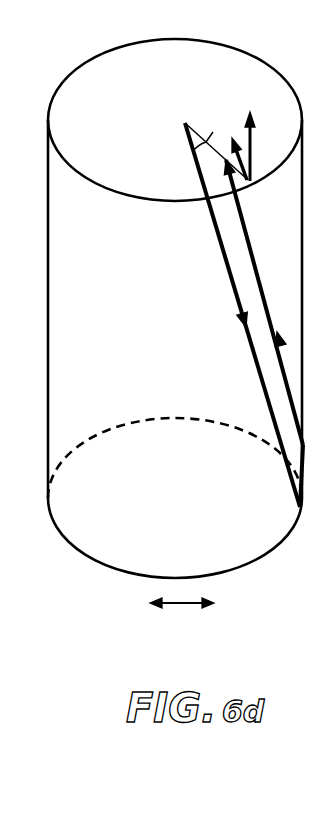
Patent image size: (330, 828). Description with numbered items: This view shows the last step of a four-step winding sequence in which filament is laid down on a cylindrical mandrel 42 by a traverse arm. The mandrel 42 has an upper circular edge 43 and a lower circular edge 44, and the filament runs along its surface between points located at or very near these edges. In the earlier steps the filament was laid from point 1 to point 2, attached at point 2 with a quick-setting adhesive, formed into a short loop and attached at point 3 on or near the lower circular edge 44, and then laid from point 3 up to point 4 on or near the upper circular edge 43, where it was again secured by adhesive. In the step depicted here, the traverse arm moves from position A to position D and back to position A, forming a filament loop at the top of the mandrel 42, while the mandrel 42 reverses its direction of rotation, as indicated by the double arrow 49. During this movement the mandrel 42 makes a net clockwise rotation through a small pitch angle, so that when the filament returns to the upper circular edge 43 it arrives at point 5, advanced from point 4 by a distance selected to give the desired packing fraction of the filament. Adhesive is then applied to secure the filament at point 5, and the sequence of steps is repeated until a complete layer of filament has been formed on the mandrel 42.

The mandrel 42 is at (49, 300).
The upper circular edge 43 is at (90, 63).
The lower circular edge 44 is at (91, 566).
The double arrow 49 is at (182, 606).
The point 1 is at (242, 307).
The point 2 is at (291, 487).
The point 3 is at (276, 322).
The point 4 is at (220, 179).
The point 5 is at (253, 162).